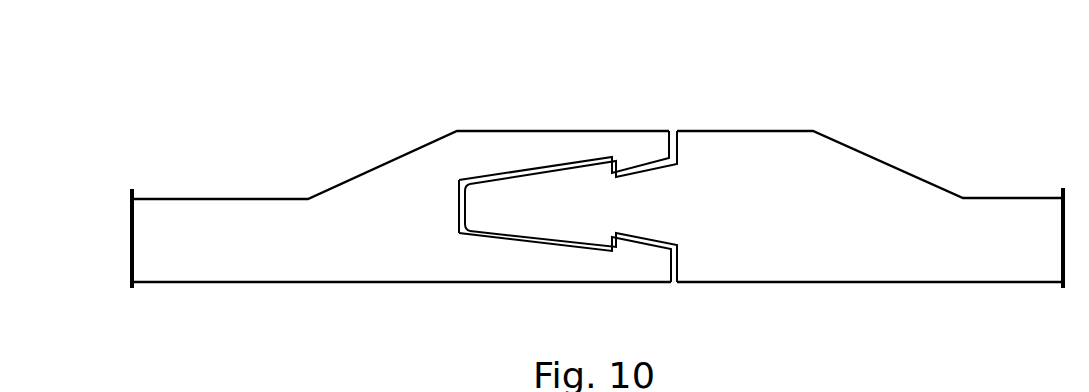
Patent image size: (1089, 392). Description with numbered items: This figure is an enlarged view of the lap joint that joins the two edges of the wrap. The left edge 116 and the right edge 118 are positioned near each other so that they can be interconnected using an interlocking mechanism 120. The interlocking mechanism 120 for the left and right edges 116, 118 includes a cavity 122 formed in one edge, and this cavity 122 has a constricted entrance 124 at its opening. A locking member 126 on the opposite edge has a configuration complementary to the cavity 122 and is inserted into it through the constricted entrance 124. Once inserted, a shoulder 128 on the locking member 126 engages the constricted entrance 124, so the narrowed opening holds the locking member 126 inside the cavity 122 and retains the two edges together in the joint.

The left edge 116 is at (520, 132).
The right edge 118 is at (788, 147).
The interlocking mechanism 120 is at (716, 90).
The cavity 122 is at (462, 232).
The constricted entrance 124 is at (632, 163).
The locking member 126 is at (545, 200).
The shoulder 128 is at (618, 243).